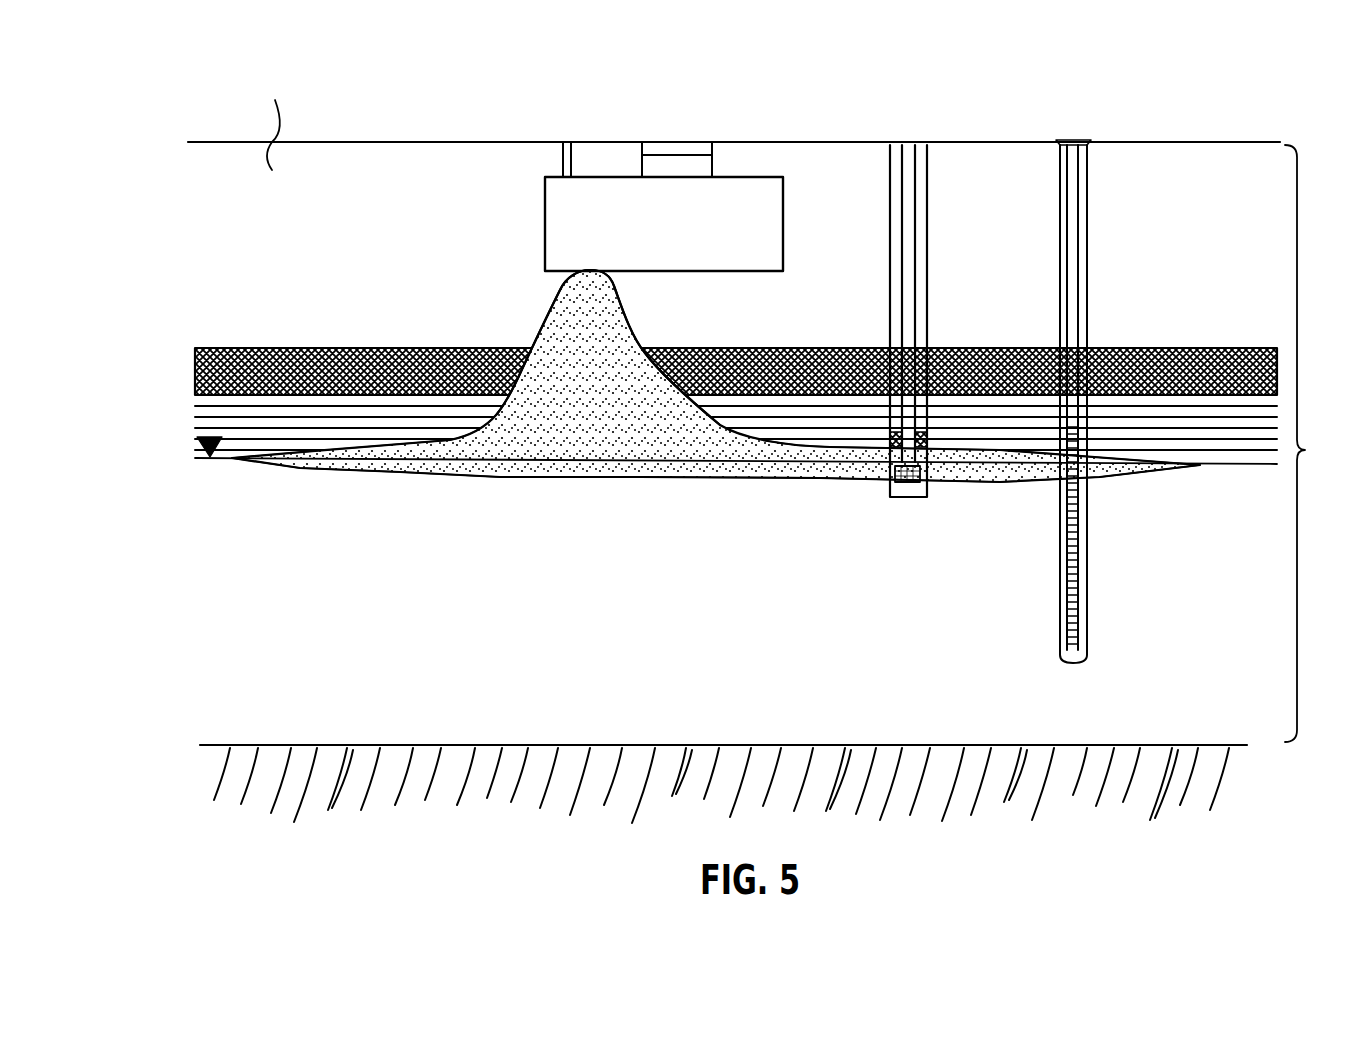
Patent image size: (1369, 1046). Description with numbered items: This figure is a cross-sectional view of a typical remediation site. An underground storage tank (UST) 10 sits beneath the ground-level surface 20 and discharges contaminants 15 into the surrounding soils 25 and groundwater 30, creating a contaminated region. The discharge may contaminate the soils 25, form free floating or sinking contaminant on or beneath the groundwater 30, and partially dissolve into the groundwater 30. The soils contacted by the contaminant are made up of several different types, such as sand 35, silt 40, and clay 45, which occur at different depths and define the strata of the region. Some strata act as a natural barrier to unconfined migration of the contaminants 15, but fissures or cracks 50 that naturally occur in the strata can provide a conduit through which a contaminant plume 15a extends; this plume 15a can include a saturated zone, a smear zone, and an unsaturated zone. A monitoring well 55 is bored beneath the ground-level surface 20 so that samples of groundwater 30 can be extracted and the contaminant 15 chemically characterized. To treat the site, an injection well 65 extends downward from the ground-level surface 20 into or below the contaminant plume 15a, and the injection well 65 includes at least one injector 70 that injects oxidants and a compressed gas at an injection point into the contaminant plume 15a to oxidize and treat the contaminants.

The underground storage tank 10 is at (682, 195).
The contaminants 15 is at (593, 275).
The contaminant plume 15a is at (652, 477).
The ground-level surface 20 is at (372, 140).
The soils 25 is at (1315, 443).
The groundwater 30 is at (205, 517).
The sand 35 is at (269, 117).
The silt 40 is at (199, 425).
The clay 45 is at (197, 368).
The fissures or cracks 50 is at (209, 795).
The monitoring well 55 is at (1077, 140).
The injection well 65 is at (911, 143).
The injector 70 is at (900, 256).